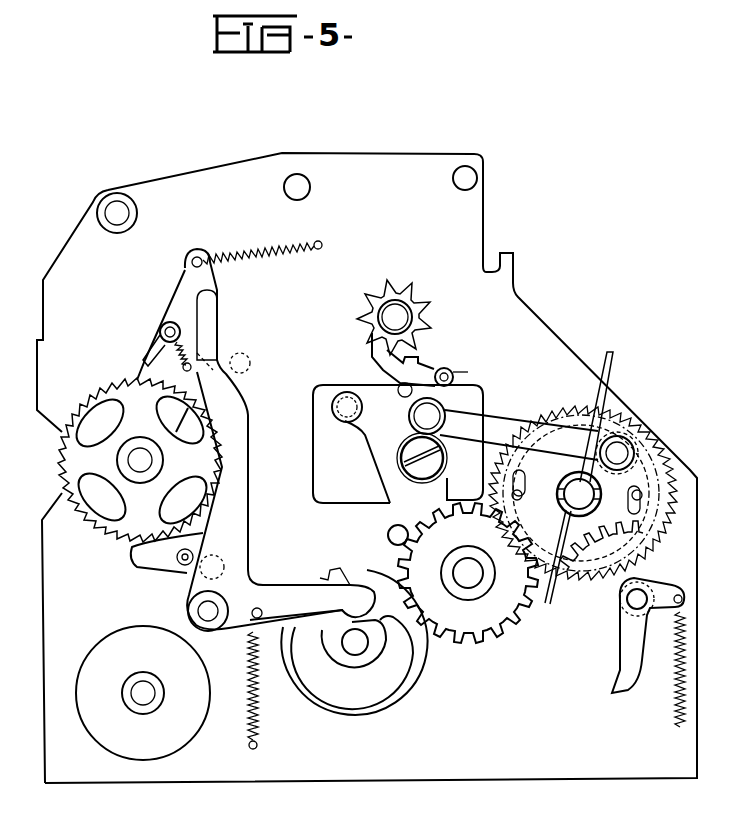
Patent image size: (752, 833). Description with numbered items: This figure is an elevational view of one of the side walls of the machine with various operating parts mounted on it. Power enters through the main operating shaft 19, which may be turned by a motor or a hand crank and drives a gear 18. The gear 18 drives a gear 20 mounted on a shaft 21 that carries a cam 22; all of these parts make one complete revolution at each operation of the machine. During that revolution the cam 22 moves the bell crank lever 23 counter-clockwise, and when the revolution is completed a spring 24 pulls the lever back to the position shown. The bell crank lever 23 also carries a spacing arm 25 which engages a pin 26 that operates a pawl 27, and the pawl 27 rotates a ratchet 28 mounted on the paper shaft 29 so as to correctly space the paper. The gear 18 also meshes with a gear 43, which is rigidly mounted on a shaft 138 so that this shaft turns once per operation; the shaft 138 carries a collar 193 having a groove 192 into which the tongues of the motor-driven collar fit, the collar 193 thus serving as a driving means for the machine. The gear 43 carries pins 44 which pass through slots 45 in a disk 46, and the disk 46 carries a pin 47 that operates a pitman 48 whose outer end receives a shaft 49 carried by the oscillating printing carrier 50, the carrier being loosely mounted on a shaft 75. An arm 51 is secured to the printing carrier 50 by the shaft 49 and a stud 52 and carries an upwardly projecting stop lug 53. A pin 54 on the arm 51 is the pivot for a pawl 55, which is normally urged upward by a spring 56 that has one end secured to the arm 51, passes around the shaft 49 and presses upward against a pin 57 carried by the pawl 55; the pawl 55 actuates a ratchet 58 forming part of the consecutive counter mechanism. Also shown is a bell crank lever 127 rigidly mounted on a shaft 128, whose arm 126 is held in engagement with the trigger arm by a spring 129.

The gear 18 is at (508, 618).
The main operating shaft 19 is at (470, 578).
The gear 20 is at (330, 580).
The shaft 21 is at (357, 645).
The cam 22 is at (405, 655).
The bell crank lever 23 is at (262, 590).
The spring 24 is at (260, 705).
The spacing arm 25 is at (212, 345).
The pin 26 is at (222, 358).
The pawl 27 is at (143, 362).
The ratchet 28 is at (86, 402).
The paper shaft 29 is at (138, 465).
The gear 43 is at (603, 556).
The pins 44 is at (521, 496).
The slots 45 is at (525, 481).
The disk 46 is at (653, 520).
The pin 47 is at (623, 452).
The pitman 48 is at (513, 428).
The shaft 49 is at (432, 416).
The oscillating printing carrier 50 is at (380, 458).
The arm 51 is at (447, 443).
The stud 52 is at (428, 470).
The stop lug 53 is at (418, 357).
The pin 54 is at (452, 378).
The pawl 55 is at (445, 366).
The spring 56 is at (408, 434).
The pin 57 is at (403, 397).
The ratchet 58 is at (412, 306).
The shaft 75 is at (388, 536).
The arm 126 is at (620, 692).
The bell crank lever 127 is at (625, 668).
The shaft 128 is at (635, 606).
The spring 129 is at (675, 672).
The shaft 138 is at (615, 450).
The groove 192 is at (548, 580).
The collar 193 is at (585, 480).